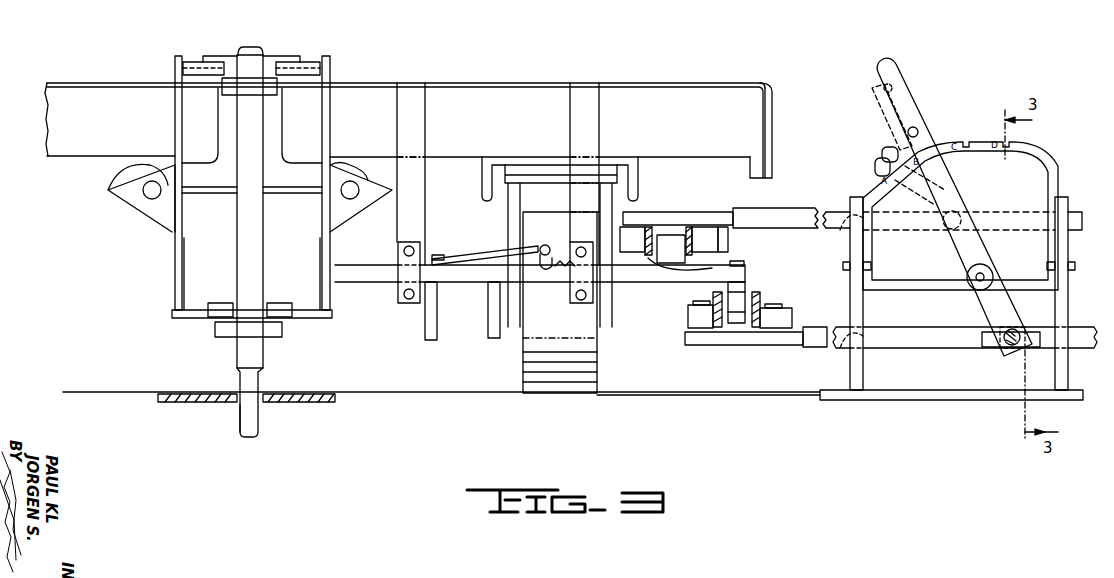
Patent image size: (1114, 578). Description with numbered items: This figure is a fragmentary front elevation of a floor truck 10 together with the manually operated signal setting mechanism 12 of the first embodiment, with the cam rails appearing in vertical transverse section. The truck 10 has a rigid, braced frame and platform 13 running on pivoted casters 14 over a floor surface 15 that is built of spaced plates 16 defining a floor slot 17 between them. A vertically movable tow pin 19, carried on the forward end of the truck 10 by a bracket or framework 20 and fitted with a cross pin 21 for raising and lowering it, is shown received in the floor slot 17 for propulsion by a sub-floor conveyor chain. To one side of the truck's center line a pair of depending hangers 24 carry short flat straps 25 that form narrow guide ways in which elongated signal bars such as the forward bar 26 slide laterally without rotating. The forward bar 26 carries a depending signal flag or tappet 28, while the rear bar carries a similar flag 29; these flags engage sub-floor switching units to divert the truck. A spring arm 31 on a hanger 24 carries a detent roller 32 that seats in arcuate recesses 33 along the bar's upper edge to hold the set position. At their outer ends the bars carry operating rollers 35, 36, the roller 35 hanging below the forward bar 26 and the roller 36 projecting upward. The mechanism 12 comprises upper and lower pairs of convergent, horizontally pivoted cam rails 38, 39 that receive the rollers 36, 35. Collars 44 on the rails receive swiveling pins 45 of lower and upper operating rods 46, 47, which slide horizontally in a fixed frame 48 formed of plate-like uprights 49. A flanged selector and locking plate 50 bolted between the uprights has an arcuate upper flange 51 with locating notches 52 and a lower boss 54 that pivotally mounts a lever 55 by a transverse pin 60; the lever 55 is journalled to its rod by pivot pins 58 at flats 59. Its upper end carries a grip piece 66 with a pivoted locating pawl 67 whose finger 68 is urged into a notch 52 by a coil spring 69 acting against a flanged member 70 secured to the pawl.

The floor truck 10 is at (572, 83).
The manually operated signal setting mechanism 12 is at (975, 113).
The frame and platform 13 is at (722, 85).
The pivoted casters 14 is at (565, 376).
The floor surface 15 is at (660, 395).
The spaced plates 16 is at (225, 392).
The floor slot 17 is at (240, 406).
The tow pin 19 is at (246, 272).
The bracket or framework 20 is at (328, 133).
The cross pin 21 is at (284, 62).
The depending brackets or hangers 24 is at (416, 208).
The flat strap guides 25 is at (405, 300).
The forward signal bar 26 is at (480, 282).
The signal flag or tappet 28 is at (495, 326).
The signal flag or tappet 29 is at (429, 334).
The spring arm 31 is at (492, 254).
The detent roller 32 is at (556, 252).
The arcuate recesses 33 is at (563, 273).
The operating roller 35 is at (746, 300).
The operating roller 36 is at (672, 242).
The upper cam or guide rails 38 is at (660, 258).
The lower cam or guide rails 39 is at (752, 328).
The collar 44 is at (644, 228).
The swiveling pins 45 is at (690, 302).
The lower operating rod 46 is at (820, 341).
The upper operating rod 47 is at (812, 214).
The fixed frame 48 is at (857, 396).
The plate-like uprights 49 is at (857, 326).
The control or selector and locking plate 50 is at (1032, 191).
The arcuate upper flange or segment 51 is at (992, 148).
The locating notches 52 is at (966, 142).
The boss 54 is at (975, 288).
The lever 55 is at (960, 215).
The pivot pins 58 is at (1016, 350).
The flats 59 is at (993, 349).
The transverse pin 60 is at (986, 270).
The hand or grip piece 66 is at (906, 116).
The locating pawl 67 is at (888, 145).
The holding finger or tooth 68 is at (880, 164).
The coil spring 69 is at (892, 86).
The flanged member 70 is at (876, 92).